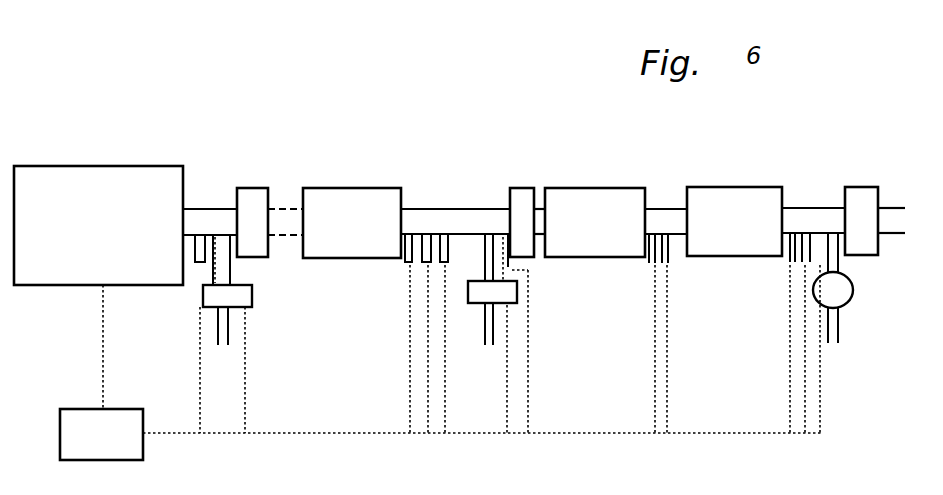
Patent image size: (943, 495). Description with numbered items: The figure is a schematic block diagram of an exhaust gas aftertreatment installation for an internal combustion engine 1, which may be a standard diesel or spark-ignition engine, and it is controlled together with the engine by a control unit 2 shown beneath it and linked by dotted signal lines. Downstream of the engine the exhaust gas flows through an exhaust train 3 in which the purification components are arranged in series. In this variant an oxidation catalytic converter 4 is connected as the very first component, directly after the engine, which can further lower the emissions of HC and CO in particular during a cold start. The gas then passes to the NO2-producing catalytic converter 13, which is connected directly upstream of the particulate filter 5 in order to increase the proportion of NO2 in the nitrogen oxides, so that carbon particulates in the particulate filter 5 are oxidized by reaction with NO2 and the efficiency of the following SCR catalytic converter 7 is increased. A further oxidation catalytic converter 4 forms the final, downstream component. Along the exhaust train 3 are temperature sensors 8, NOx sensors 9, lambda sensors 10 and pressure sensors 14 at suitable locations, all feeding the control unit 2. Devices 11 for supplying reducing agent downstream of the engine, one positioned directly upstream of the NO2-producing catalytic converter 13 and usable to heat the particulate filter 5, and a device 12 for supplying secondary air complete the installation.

The internal combustion engine 1 is at (83, 183).
The control unit 2 is at (128, 424).
The exhaust train 3 is at (432, 222).
The oxidation catalytic converter 4 is at (252, 200).
The particulate filter 5 is at (592, 220).
The SCR catalytic converter 7 is at (733, 210).
The temperature sensors 8 is at (357, 237).
The NOx sensors 9 is at (450, 265).
The lambda sensors 10 is at (202, 260).
The device for supplying reducing agent 11 is at (240, 297).
The device for supplying secondary air 12 is at (840, 307).
The NO2-producing catalytic converter 13 is at (520, 200).
The pressure sensors 14 is at (515, 262).